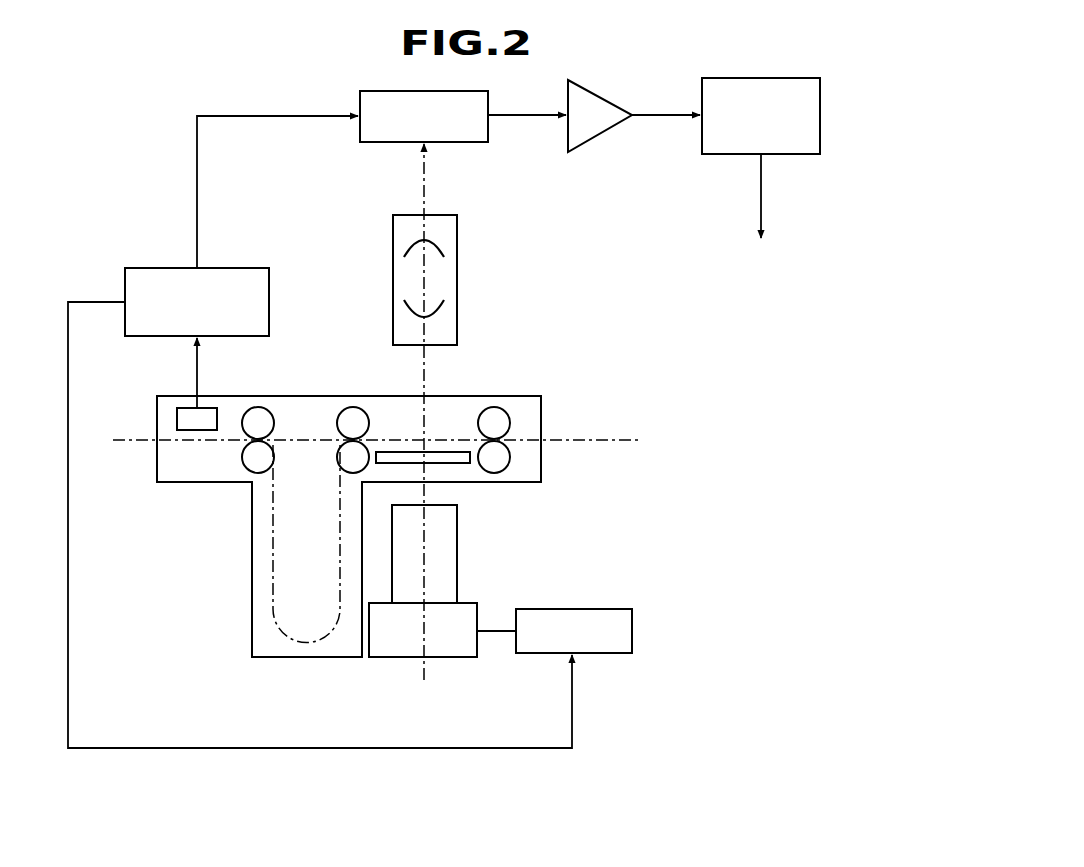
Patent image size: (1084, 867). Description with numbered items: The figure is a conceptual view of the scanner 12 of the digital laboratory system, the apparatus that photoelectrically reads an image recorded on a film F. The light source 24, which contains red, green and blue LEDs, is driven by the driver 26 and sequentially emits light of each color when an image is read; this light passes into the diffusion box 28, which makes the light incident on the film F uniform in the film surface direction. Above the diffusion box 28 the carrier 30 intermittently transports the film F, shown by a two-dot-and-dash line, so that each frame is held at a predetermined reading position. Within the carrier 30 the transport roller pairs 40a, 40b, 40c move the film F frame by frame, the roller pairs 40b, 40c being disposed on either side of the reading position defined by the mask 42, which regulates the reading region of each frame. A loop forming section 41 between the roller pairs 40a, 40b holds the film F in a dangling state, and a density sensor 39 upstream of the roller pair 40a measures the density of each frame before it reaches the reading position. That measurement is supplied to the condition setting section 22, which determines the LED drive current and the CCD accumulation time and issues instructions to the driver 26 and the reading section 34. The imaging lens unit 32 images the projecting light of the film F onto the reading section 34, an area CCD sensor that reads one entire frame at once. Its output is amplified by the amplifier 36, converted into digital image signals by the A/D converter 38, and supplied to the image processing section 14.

The scanner 12 is at (132, 107).
The image processing section 14 is at (779, 215).
The condition setting section 22 is at (232, 268).
The light source 24 is at (410, 657).
The driver 26 is at (632, 631).
The diffusion box 28 is at (457, 568).
The carrier 30 is at (543, 407).
The imaging lens unit 32 is at (457, 253).
The reading section 34 is at (474, 142).
The amplifier 36 is at (597, 130).
The A/D converter 38 is at (820, 113).
The density sensor 39 is at (177, 420).
The transport roller pair 40a is at (270, 407).
The transport roller pair 40b is at (344, 407).
The transport roller pair 40c is at (503, 462).
The loop forming section 41 is at (266, 642).
The mask 42 is at (460, 457).
The film F is at (585, 437).